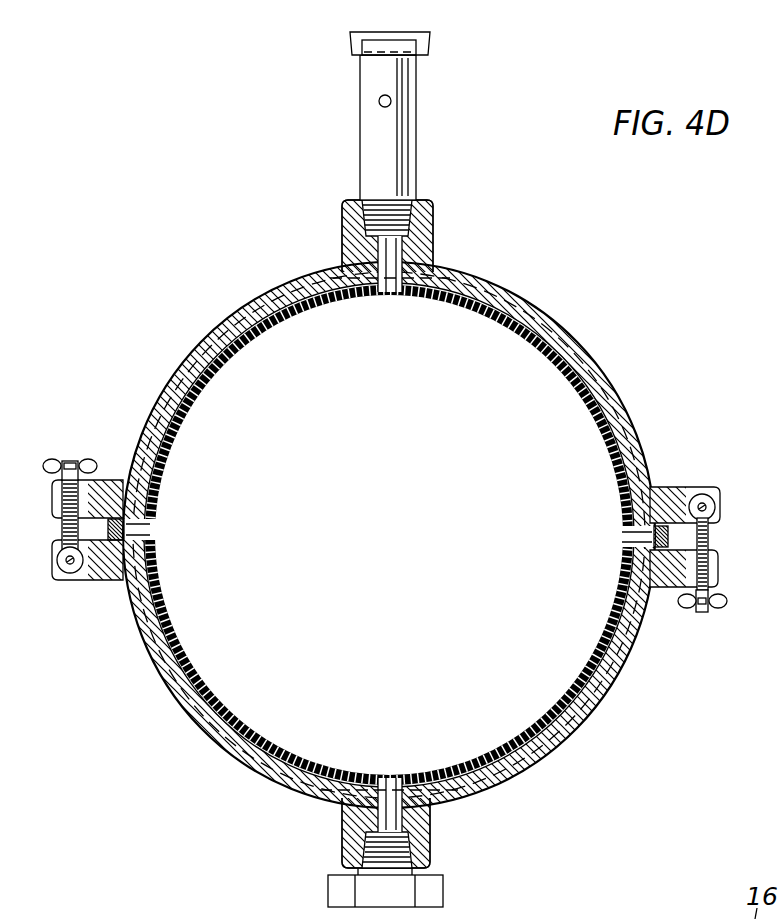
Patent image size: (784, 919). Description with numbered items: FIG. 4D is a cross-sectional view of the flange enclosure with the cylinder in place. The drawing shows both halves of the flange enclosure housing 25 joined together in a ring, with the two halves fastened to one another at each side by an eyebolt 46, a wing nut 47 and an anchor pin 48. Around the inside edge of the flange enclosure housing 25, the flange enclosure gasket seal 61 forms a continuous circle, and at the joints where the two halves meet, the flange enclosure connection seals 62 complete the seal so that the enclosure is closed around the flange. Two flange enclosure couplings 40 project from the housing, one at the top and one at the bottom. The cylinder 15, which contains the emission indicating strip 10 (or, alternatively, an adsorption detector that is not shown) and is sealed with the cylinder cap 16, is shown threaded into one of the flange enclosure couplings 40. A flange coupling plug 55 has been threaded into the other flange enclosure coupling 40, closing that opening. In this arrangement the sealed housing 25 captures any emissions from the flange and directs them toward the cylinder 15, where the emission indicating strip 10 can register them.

The emission indicating strip 10 is at (379, 98).
The cylinder 15 is at (350, 133).
The cylinder cap 16 is at (410, 32).
The flange enclosure housing 25 is at (166, 366).
The flange enclosure coupling 40 is at (437, 225).
The eyebolt 46 is at (712, 538).
The wing nut 47 is at (718, 609).
The anchor pin 48 is at (62, 590).
The flange coupling plug 55 is at (330, 893).
The flange enclosure gasket seal 61 is at (168, 443).
The flange enclosure connection seal 62 is at (115, 542).